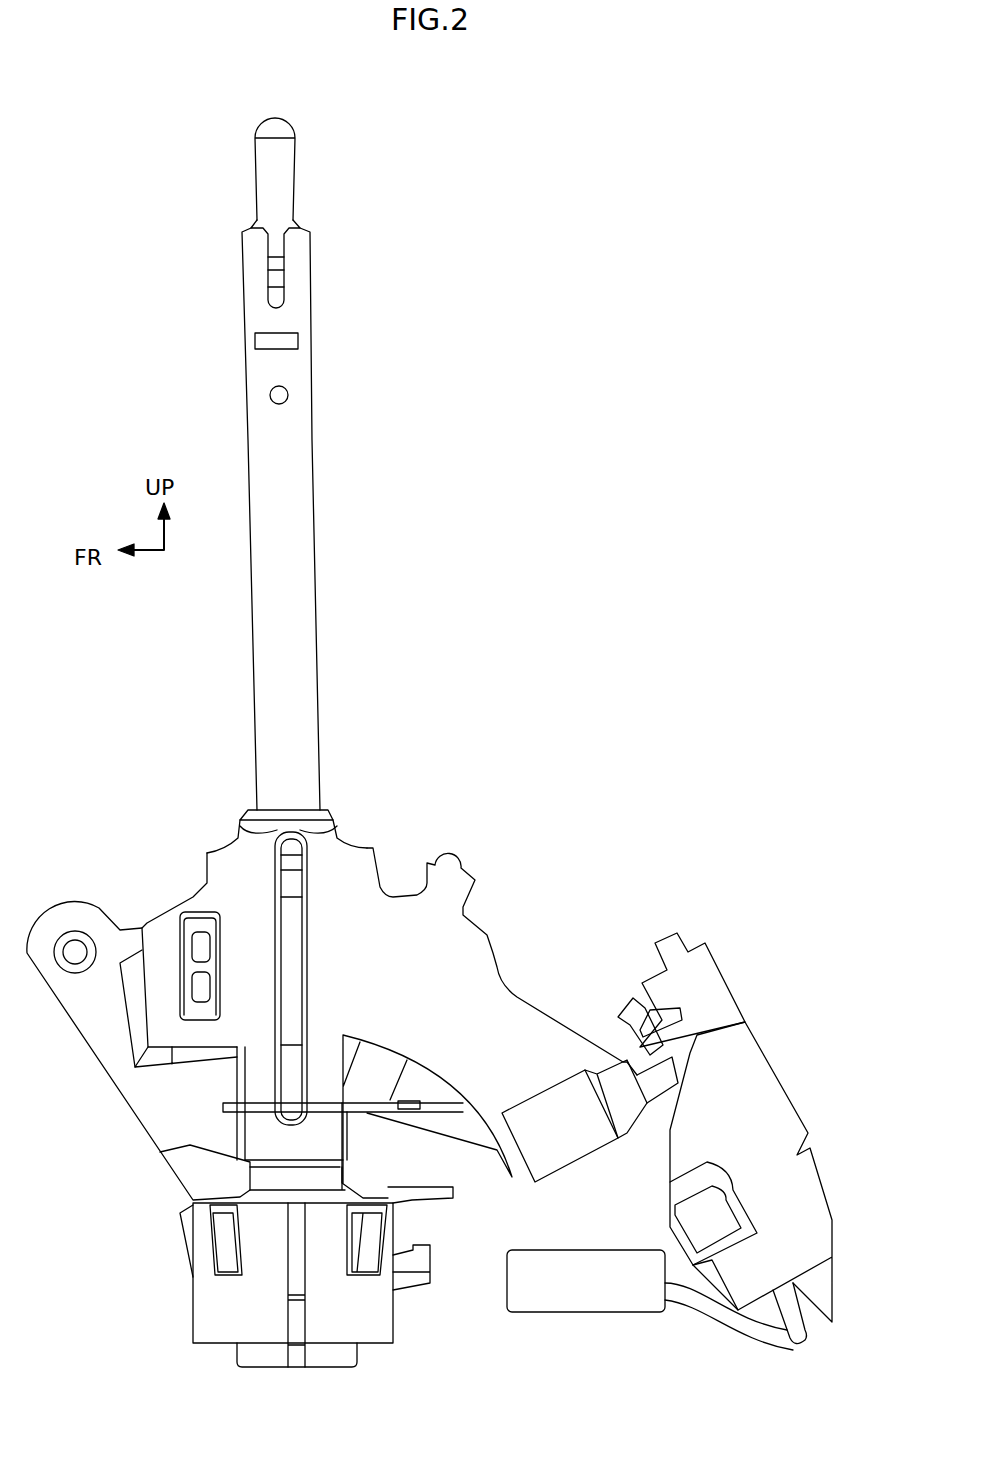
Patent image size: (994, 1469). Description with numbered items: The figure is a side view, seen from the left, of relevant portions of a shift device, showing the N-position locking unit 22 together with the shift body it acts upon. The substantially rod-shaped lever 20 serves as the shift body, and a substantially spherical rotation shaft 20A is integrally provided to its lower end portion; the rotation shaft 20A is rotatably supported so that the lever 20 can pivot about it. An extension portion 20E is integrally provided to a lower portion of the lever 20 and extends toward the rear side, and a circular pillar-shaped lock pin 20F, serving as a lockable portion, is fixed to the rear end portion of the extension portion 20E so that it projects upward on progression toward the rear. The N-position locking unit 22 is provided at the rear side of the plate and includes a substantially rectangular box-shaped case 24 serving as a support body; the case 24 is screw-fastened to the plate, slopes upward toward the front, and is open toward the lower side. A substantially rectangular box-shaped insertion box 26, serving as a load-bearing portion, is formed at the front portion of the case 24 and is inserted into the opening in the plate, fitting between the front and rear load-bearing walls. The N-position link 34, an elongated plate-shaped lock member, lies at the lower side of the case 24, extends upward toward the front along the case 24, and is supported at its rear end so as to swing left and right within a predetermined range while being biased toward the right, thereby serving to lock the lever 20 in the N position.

The lever 20 is at (316, 533).
The N-position N is at (316, 638).
The rotation shaft 20A is at (240, 1197).
The extension portion 20E is at (495, 957).
The lock pin 20F is at (640, 1053).
The N-position locking unit 22 is at (772, 1035).
The case 24 is at (785, 1087).
The insertion box 26 is at (730, 982).
The N-position link 34 is at (629, 1000).